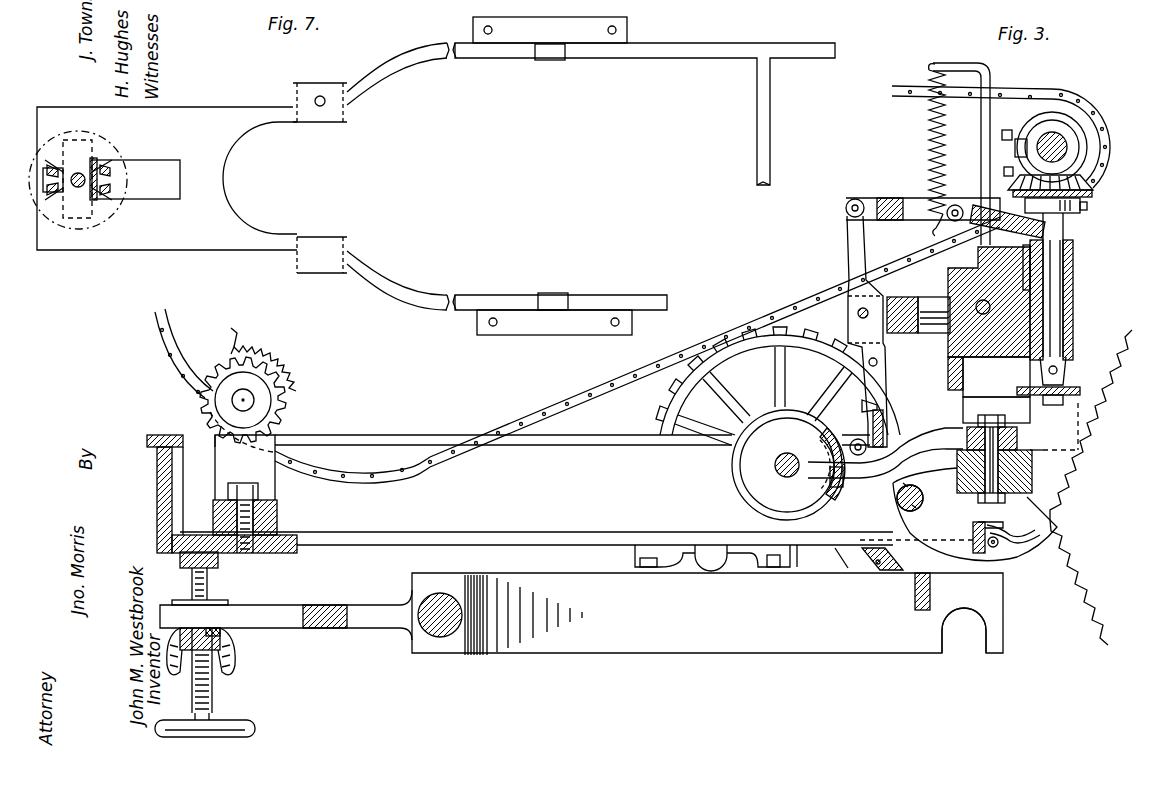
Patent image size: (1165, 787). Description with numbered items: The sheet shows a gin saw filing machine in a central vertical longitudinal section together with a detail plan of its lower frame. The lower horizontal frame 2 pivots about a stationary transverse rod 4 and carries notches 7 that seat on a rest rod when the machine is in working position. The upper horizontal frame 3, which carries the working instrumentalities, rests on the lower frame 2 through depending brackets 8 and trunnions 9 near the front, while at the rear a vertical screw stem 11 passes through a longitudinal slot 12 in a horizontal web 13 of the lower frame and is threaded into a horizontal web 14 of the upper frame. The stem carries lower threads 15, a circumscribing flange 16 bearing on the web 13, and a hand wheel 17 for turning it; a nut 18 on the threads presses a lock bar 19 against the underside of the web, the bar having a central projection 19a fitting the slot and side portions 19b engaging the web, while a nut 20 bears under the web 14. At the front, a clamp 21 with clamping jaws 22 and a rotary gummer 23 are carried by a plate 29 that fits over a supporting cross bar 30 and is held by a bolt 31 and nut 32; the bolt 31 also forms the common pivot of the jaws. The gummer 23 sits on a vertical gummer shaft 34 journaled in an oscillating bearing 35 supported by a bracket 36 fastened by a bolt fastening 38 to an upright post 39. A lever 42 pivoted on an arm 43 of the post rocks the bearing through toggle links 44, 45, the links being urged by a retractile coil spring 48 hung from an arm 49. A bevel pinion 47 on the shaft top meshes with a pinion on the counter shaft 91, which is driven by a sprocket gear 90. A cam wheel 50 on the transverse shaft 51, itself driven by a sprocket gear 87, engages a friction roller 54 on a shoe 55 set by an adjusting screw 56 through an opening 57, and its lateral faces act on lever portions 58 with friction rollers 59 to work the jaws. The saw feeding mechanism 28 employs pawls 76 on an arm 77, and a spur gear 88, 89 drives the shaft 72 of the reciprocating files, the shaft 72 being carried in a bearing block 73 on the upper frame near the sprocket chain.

In FIG. 7, the lower horizontal frame 2 is at (257, 106).
In FIG. 3, the lower horizontal frame 2 is at (600, 648).
In FIG. 3, the upper horizontal frame 3 is at (541, 502).
In FIG. 3, the stationary transverse rod 4 is at (438, 632).
In FIG. 3, the recesses or notches 7 is at (947, 640).
In FIG. 7, the depending brackets 8 is at (528, 27).
In FIG. 3, the depending brackets 8 is at (670, 567).
In FIG. 7, the trunnions 9 is at (547, 60).
In FIG. 3, the trunnions 9 is at (715, 566).
In FIG. 7, the vertical screw stem 11 is at (75, 186).
In FIG. 3, the vertical screw stem 11 is at (212, 582).
In FIG. 7, the longitudinal slot 12 is at (136, 179).
In FIG. 3, the longitudinal slot 12 is at (293, 628).
In FIG. 7, the horizontal web 13 is at (160, 227).
In FIG. 3, the horizontal web 13 is at (335, 628).
In FIG. 3, the horizontal web 14 is at (180, 553).
In FIG. 3, the threads 15 is at (213, 695).
In FIG. 3, the circumscribing flange 16 is at (228, 603).
In FIG. 3, the hand wheel 17 is at (258, 728).
In FIG. 3, the nut 18 is at (237, 665).
In FIG. 3, the lock bar 19 is at (220, 637).
In FIG. 7, the central projection 19a is at (105, 163).
In FIG. 3, the central projection 19a is at (217, 628).
In FIG. 7, the side portions 19b is at (107, 158).
In FIG. 3, the nut 20 is at (220, 560).
In FIG. 3, the clamp 21 is at (1082, 445).
In FIG. 3, the clamping jaws 22 is at (1050, 455).
In FIG. 3, the rotary file or gummer 23 is at (1077, 413).
In FIG. 3, the saw feeding mechanism 28 is at (1027, 552).
In FIG. 3, the plate 29 is at (957, 470).
In FIG. 3, the supporting cross bar 30 is at (963, 495).
In FIG. 3, the bolt 31 is at (1016, 528).
In FIG. 3, the nut 32 is at (988, 530).
In FIG. 3, the gummer shaft 34 is at (1073, 325).
In FIG. 3, the bearing 35 is at (1075, 291).
In FIG. 3, the bracket 36 is at (1030, 273).
In FIG. 3, the bolt fastening 38 is at (950, 338).
In FIG. 3, the upright post or bracket 39 is at (963, 362).
In FIG. 3, the lever 42 is at (873, 285).
In FIG. 3, the arm 43 is at (938, 315).
In FIG. 3, the rear toggle link 44 is at (897, 207).
In FIG. 3, the front toggle link 45 is at (968, 202).
In FIG. 3, the bevel pinion 47 is at (1093, 187).
In FIG. 3, the retractile coil spring 48 is at (928, 137).
In FIG. 3, the arm 49 is at (990, 73).
In FIG. 3, the cam wheel 50 is at (748, 463).
In FIG. 3, the transverse shaft 51 is at (778, 472).
In FIG. 3, the friction roller 54 is at (858, 458).
In FIG. 3, the shoe 55 is at (962, 393).
In FIG. 3, the adjusting screw 56 is at (963, 410).
In FIG. 3, the opening 57 is at (887, 413).
In FIG. 3, the lever portions 58 is at (897, 500).
In FIG. 3, the friction rollers 59 is at (836, 488).
In FIG. 3, the shaft 72 is at (250, 407).
In FIG. 3, the bearing block 73 is at (273, 482).
In FIG. 3, the pawls 76 is at (1053, 530).
In FIG. 3, the arm 77 is at (957, 547).
In FIG. 3, the sprocket gear 87 is at (512, 387).
In FIG. 3, the spur gear 88 is at (320, 390).
In FIG. 3, the spur gear 89 is at (273, 427).
In FIG. 3, the sprocket gear 90 is at (1005, 137).
In FIG. 3, the counter shaft 91 is at (1062, 138).